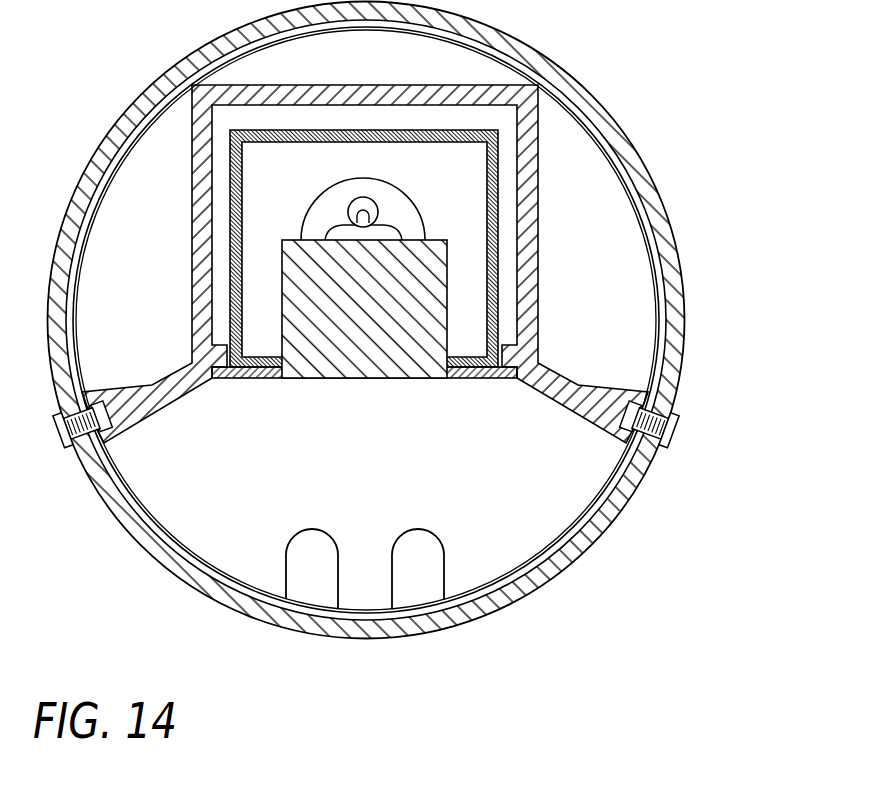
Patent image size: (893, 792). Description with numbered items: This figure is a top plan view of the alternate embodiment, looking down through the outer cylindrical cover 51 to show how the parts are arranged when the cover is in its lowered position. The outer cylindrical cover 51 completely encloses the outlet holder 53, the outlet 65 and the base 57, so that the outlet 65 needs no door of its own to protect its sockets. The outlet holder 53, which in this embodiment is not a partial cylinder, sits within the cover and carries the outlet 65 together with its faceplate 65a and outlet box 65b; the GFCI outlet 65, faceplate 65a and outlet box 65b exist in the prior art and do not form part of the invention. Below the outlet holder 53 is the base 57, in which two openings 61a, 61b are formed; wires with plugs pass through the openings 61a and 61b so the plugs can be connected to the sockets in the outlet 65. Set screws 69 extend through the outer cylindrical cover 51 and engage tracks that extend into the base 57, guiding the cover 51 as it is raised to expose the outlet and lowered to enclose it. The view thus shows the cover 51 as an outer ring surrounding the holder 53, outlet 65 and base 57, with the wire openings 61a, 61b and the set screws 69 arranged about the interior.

The outer cylindrical cover 51 is at (670, 368).
The outlet holder 53 is at (538, 318).
The base 57 is at (508, 497).
The slot 61a is at (318, 573).
The slot 61b is at (418, 573).
The GFCI outlet 65 is at (403, 380).
The faceplate 65a is at (257, 380).
The outlet box 65b is at (242, 197).
The set screw 69 is at (670, 427).